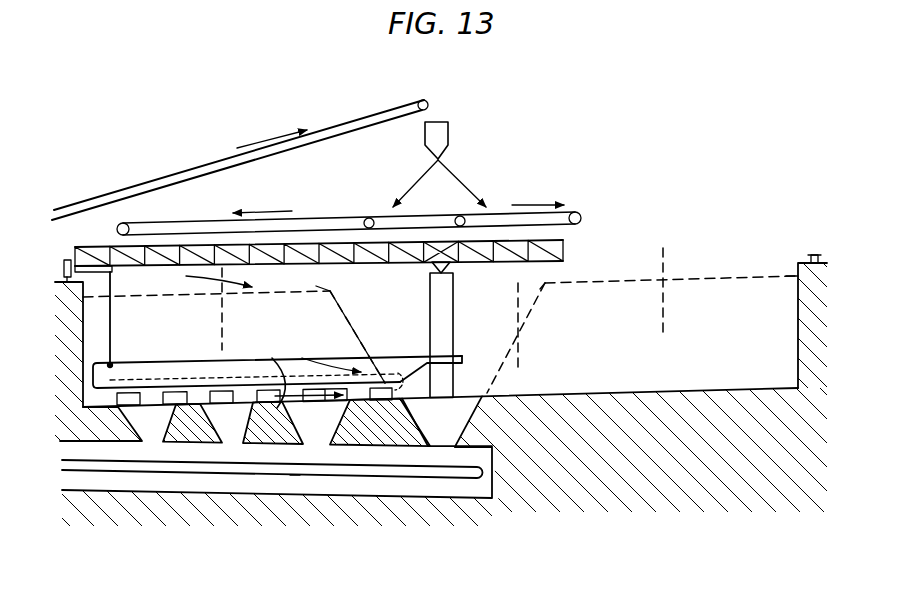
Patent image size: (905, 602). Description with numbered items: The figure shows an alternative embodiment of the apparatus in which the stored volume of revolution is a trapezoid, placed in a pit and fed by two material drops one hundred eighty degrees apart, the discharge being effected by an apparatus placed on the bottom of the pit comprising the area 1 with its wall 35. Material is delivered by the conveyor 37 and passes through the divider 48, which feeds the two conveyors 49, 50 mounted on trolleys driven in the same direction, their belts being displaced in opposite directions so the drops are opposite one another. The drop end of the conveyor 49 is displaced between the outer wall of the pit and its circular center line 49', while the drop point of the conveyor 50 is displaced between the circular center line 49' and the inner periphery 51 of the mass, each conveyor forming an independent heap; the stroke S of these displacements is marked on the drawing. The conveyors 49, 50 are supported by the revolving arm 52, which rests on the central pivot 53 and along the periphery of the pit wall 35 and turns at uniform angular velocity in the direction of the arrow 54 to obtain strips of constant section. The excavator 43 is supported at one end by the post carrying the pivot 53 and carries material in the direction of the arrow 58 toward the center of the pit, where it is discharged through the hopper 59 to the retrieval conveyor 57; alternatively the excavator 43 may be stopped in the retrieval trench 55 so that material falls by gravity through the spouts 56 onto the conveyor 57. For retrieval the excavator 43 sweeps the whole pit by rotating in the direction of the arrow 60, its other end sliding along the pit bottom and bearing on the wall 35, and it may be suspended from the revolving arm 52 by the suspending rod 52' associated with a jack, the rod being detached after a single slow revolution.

The area 1 is at (323, 443).
The wall 35 is at (86, 328).
The conveyor 37 is at (326, 130).
The excavator 43 is at (184, 372).
The divider 48 is at (448, 133).
The conveyor 49 is at (349, 217).
The circular center line 49' is at (464, 308).
The conveyor 50 is at (522, 211).
The inner periphery 51 is at (518, 311).
The revolving arm 52 is at (319, 264).
The suspending rod 52' is at (133, 320).
The central pivot 53 is at (452, 270).
The arrow 54 is at (202, 284).
The retrieval trench 55 is at (102, 485).
The spouts 56 is at (150, 423).
The retrieval conveyor 57 is at (297, 471).
The arrow 58 is at (278, 364).
The hopper 59 is at (442, 428).
The arrow 60 is at (329, 353).
The stroke length S is at (322, 289).